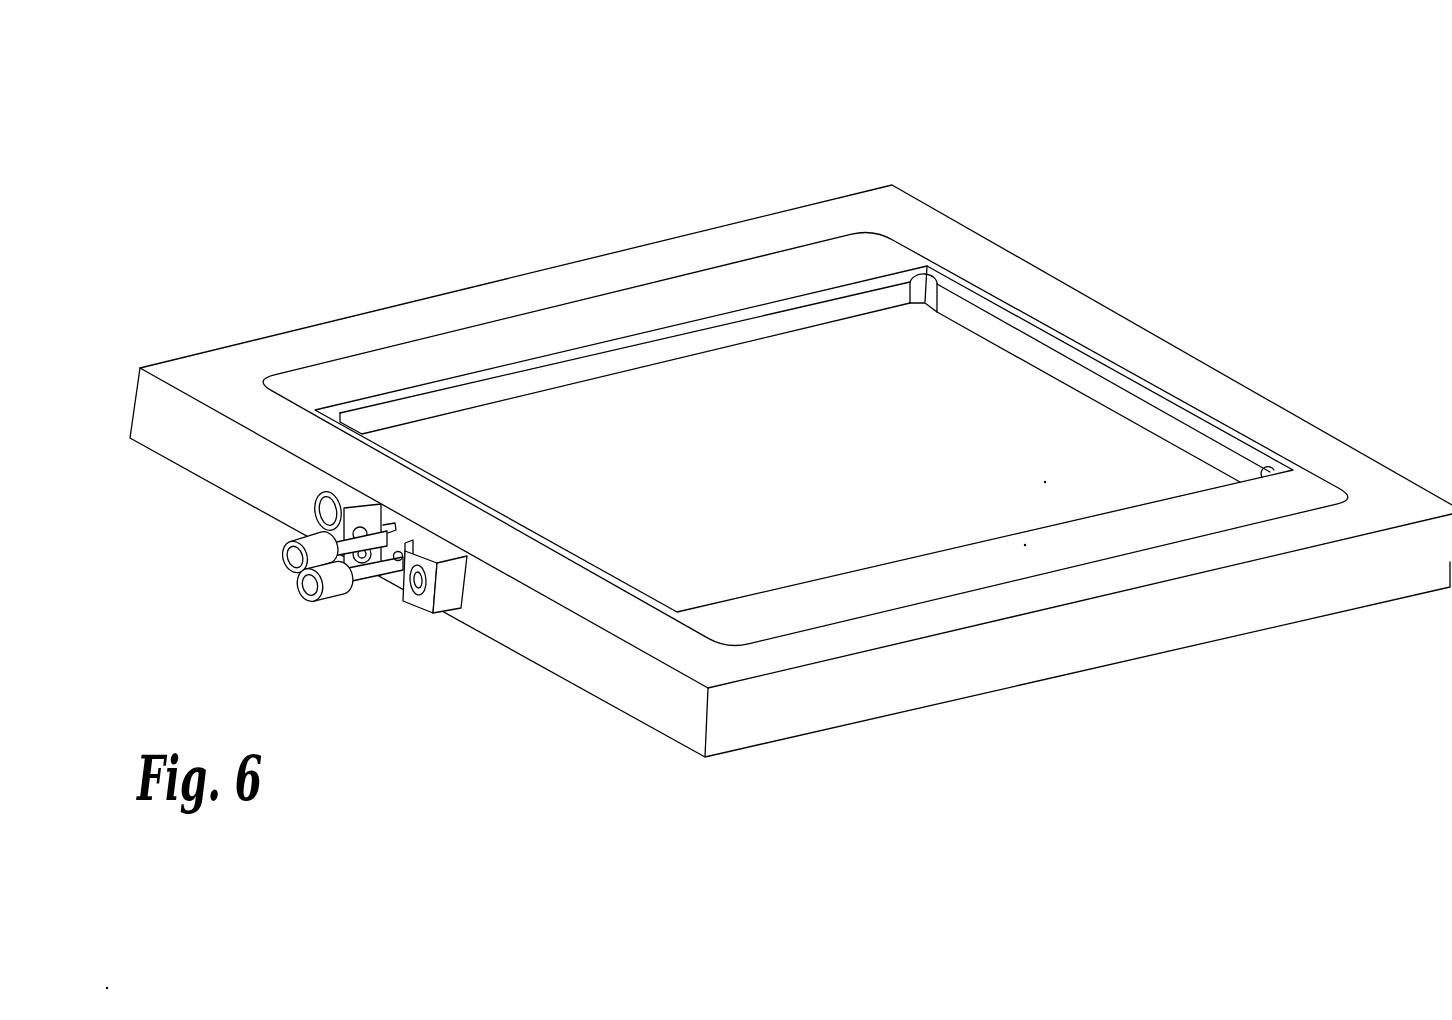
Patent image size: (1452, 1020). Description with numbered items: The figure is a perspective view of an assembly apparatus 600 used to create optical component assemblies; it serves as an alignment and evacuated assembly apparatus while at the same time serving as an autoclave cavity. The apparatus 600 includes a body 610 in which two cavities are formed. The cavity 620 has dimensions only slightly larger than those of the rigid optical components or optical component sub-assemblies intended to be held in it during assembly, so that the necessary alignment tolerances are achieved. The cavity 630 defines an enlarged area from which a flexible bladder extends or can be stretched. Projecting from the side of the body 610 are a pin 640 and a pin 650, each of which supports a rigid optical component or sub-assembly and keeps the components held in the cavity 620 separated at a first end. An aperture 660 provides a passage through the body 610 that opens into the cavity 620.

The assembly apparatus 600 is at (317, 145).
The body 610 is at (947, 218).
The cavity 620 is at (803, 322).
The cavity 630 is at (605, 325).
The pin 640 is at (352, 580).
The pin 650 is at (283, 565).
The aperture 660 is at (316, 514).